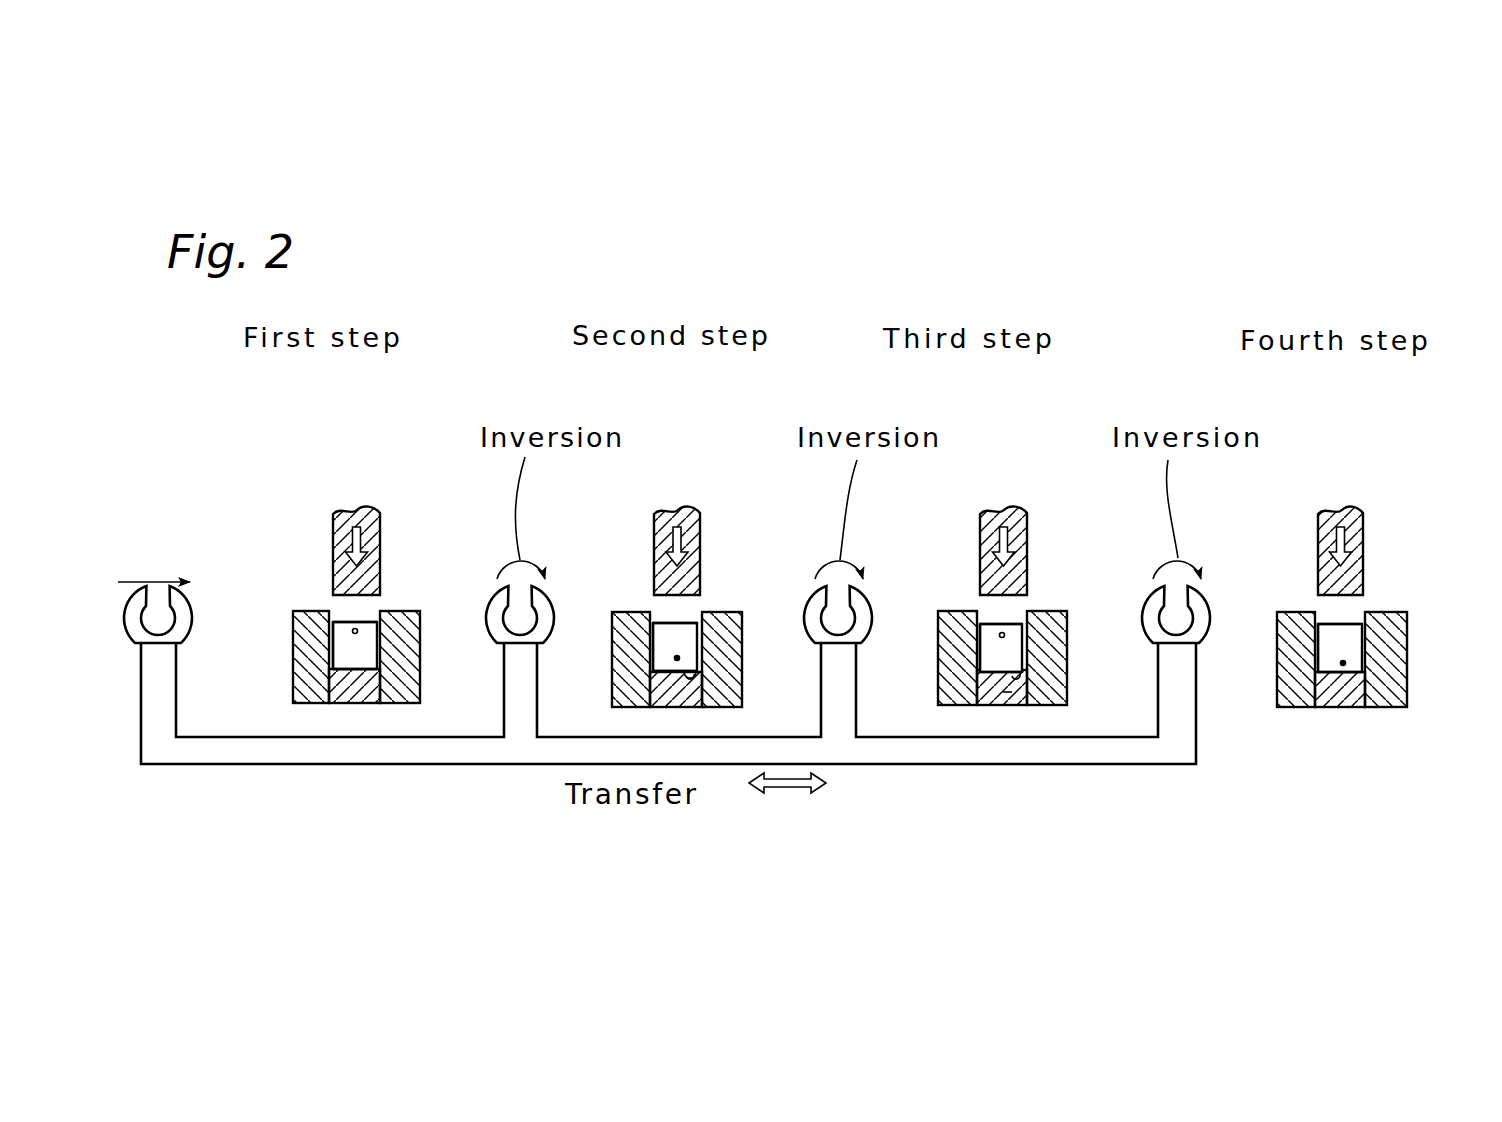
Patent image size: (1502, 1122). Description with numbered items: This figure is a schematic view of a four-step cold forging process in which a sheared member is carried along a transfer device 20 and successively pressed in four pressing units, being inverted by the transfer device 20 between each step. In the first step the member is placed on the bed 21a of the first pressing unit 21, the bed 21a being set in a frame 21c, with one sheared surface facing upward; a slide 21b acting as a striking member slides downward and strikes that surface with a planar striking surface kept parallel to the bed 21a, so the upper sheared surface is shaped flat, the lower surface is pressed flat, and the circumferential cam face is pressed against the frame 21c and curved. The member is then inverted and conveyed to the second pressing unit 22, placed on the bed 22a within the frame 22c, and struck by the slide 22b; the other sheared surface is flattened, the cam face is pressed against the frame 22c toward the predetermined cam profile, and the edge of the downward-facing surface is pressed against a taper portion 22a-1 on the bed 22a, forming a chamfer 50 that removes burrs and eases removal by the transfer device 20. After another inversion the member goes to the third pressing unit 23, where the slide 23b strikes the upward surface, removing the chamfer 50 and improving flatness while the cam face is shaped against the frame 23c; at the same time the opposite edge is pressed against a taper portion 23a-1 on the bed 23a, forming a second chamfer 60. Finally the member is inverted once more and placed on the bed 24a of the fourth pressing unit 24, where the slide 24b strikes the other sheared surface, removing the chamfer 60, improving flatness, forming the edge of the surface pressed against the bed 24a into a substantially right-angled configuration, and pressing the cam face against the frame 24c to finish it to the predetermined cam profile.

The transfer device 20 is at (289, 766).
The first pressing unit 21 is at (349, 610).
The bed 21a is at (362, 706).
The slide 21b is at (380, 540).
The frame 21c is at (408, 642).
The second pressing unit 22 is at (742, 648).
The bed 22a is at (690, 706).
The taper portion 22a-1 is at (700, 688).
The slide 22b is at (700, 545).
The frame 22c is at (735, 642).
The third pressing unit 23 is at (1078, 626).
The bed 23a is at (1015, 706).
The taper portion 23a-1 is at (1007, 692).
The slide 23b is at (1027, 541).
The frame 23c is at (1058, 626).
The fourth pressing unit 24 is at (1356, 637).
The bed 24a is at (1335, 700).
The slide 24b is at (1363, 560).
The frame 24c is at (1400, 625).
The chamfer 50 is at (692, 673).
The chamfer 60 is at (1018, 672).